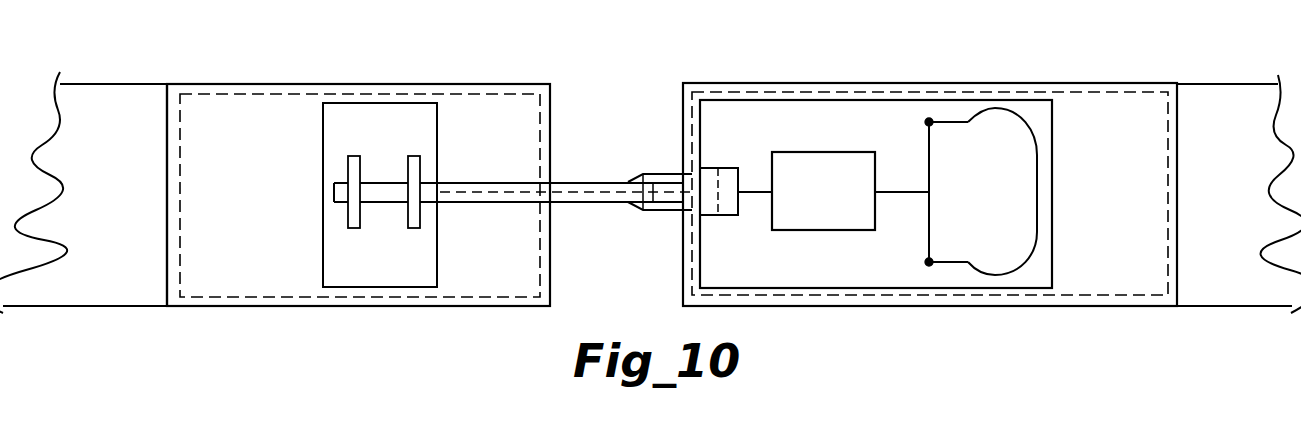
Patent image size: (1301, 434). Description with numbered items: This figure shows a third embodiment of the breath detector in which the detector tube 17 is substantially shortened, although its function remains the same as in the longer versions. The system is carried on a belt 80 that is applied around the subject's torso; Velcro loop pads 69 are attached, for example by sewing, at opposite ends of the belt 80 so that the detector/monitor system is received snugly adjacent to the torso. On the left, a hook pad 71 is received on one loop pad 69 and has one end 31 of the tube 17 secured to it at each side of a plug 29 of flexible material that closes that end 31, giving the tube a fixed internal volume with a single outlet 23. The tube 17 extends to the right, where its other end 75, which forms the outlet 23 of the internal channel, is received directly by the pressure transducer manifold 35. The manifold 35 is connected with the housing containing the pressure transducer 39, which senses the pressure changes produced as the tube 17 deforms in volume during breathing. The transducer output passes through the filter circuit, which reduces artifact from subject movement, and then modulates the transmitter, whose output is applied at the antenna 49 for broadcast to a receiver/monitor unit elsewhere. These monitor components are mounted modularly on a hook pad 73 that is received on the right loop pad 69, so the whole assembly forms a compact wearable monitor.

The belt 80 is at (137, 106).
The loop pad 69 is at (525, 105).
The hook pad 71 is at (425, 115).
The plug 29 is at (384, 124).
The end 31 is at (337, 178).
The tube 17 is at (598, 148).
The outlet 23 is at (656, 185).
The end 75 is at (683, 212).
The pressure transducer manifold 35 is at (704, 180).
The pressure transducer 39 is at (735, 178).
The antenna 49 is at (995, 108).
The hook pad 73 is at (1040, 105).